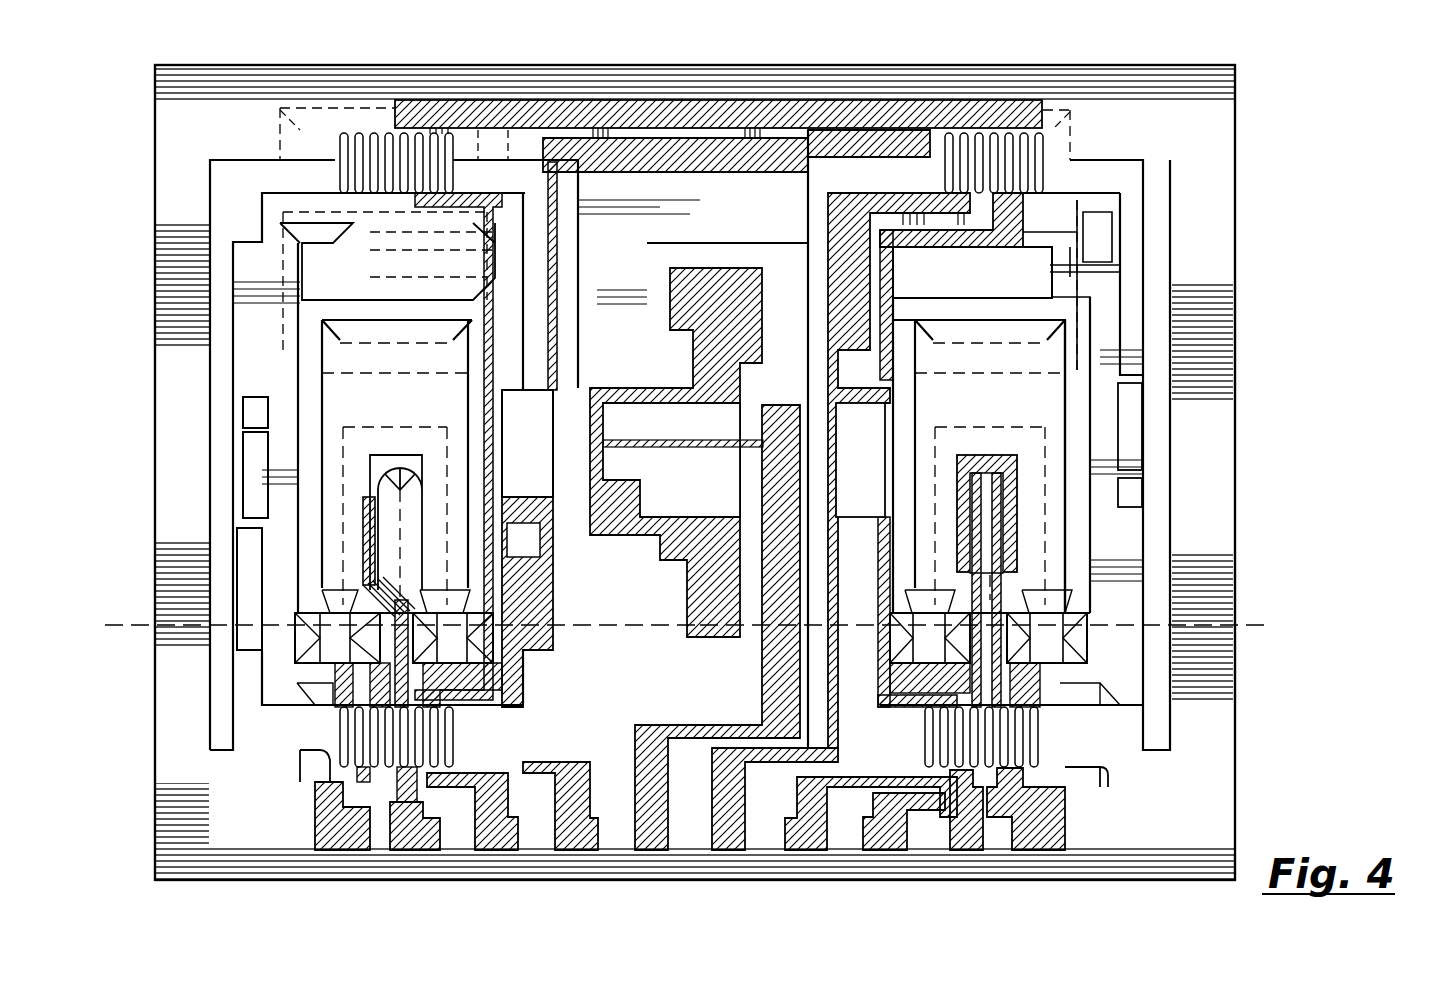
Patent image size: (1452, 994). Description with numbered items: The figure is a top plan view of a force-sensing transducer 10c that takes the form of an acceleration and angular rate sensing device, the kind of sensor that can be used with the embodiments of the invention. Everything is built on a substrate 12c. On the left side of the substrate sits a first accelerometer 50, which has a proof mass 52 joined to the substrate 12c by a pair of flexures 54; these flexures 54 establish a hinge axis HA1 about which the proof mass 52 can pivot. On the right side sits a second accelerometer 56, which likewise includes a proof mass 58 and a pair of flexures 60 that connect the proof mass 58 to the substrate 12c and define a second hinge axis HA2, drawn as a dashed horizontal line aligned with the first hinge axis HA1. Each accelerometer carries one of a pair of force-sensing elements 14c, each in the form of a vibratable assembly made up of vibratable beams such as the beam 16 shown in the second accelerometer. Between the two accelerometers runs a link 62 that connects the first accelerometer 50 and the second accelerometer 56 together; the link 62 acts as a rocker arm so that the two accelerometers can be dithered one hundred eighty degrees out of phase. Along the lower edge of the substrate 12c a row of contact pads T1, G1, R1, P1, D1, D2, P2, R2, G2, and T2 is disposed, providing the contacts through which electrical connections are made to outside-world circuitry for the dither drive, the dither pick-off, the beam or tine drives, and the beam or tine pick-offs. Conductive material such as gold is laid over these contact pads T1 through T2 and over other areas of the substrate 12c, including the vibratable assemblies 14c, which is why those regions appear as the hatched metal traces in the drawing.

The force-sensing transducer 10c is at (1395, 104).
The substrate 12c is at (1208, 233).
The force-sensing elements 14c is at (942, 496).
The vibratable beam 16 is at (1018, 470).
The first accelerometer 50 is at (482, 443).
The proof mass 52 is at (404, 412).
The flexures 54 is at (438, 652).
The second accelerometer 56 is at (1090, 540).
The proof mass 58 is at (996, 412).
The flexures 60 is at (938, 650).
The link 62 is at (652, 498).
The hinge axis HA1 is at (396, 598).
The second hinge axis HA2 is at (1272, 635).
The contact pad T1 is at (342, 848).
The contact pad G1 is at (415, 848).
The contact pad R1 is at (497, 848).
The contact pad P1 is at (574, 848).
The contact pad D1 is at (650, 848).
The contact pad D2 is at (727, 848).
The contact pad P2 is at (805, 848).
The contact pad R2 is at (885, 848).
The contact pad G2 is at (965, 848).
The contact pad T2 is at (1042, 848).